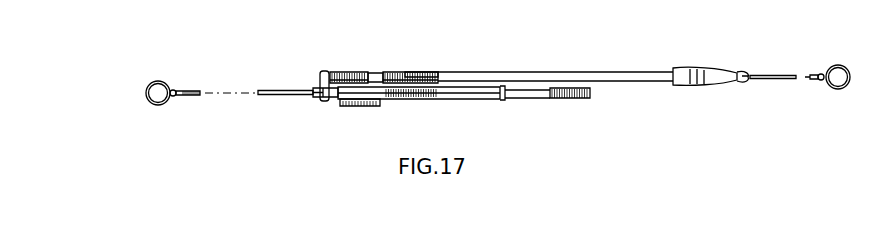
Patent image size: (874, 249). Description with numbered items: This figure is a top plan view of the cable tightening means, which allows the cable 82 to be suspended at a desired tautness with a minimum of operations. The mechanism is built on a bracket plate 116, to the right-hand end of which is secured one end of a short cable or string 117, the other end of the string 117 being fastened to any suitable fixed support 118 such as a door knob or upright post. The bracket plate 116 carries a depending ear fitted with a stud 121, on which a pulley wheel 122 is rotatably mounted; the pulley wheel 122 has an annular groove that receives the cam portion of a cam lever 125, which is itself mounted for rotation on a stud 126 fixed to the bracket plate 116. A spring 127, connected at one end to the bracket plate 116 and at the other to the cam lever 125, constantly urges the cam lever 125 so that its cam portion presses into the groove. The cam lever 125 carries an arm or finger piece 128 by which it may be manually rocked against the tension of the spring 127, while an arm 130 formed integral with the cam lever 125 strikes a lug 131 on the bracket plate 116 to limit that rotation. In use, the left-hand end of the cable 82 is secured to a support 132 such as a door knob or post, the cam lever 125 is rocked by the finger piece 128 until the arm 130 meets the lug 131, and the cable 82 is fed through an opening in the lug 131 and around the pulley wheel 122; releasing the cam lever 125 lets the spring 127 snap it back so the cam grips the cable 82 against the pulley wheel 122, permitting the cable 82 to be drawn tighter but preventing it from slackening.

The cable 82 is at (291, 90).
The bracket plate 116 is at (627, 58).
The short cable or string 117 is at (777, 75).
The fixed support 118 is at (842, 65).
The stud 121 is at (371, 72).
The pulley wheel 122 is at (339, 106).
The cam lever 125 is at (443, 94).
The stud 126 is at (376, 73).
The spring 127 is at (417, 74).
The arm or finger piece 128 is at (585, 98).
The arm 130 is at (319, 99).
The lug 131 is at (317, 80).
The support 132 is at (163, 90).